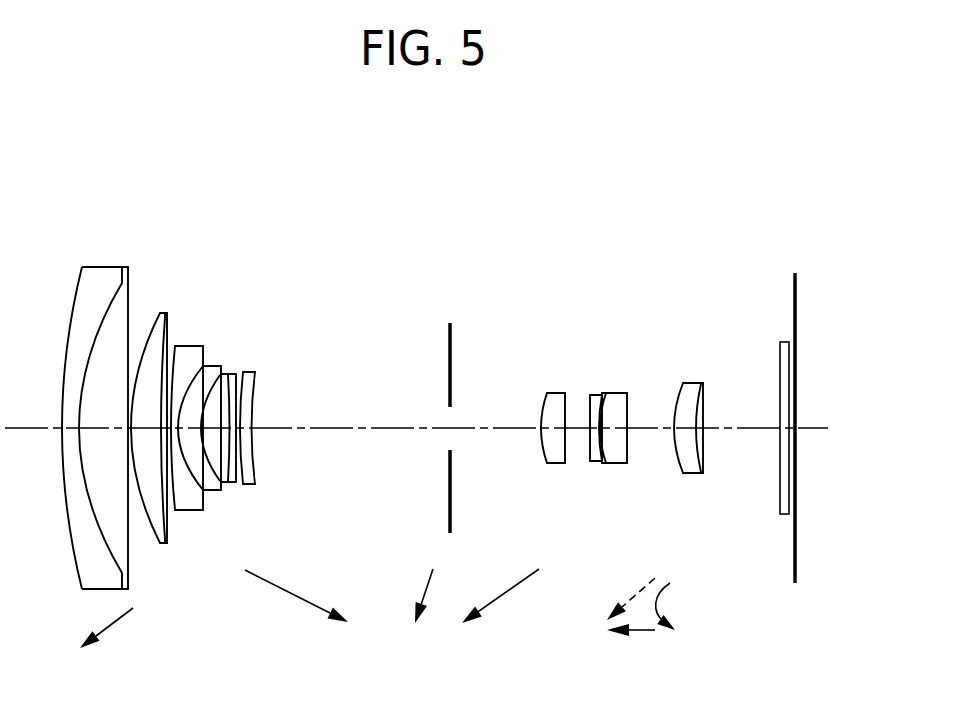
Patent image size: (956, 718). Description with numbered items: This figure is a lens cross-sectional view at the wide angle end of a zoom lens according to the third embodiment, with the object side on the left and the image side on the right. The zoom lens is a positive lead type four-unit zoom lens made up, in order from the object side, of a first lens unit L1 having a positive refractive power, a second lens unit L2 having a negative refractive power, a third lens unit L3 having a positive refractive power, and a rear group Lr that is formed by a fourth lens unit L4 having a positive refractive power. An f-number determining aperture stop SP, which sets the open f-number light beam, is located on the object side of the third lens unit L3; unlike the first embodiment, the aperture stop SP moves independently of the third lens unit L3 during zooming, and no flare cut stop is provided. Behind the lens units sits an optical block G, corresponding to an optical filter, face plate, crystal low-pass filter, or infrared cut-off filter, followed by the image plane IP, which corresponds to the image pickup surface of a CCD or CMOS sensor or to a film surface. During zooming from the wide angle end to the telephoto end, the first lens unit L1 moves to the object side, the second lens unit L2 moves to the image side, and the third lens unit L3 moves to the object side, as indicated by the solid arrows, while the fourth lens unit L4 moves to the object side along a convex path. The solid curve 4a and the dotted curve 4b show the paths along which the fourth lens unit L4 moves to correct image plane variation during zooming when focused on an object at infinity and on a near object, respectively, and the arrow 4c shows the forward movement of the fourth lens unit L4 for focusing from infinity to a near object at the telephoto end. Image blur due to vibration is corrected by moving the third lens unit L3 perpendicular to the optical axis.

The first lens unit L1 is at (172, 228).
The second lens unit L2 is at (252, 228).
The third lens unit L3 is at (637, 228).
The fourth lens unit L4 is at (684, 322).
The rear group Lr is at (710, 290).
The aperture stop SP is at (447, 335).
The optical block G is at (783, 355).
The image plane IP is at (796, 382).
The solid curve 4a is at (668, 585).
The dotted curve 4b is at (658, 572).
The arrow 4c is at (645, 633).